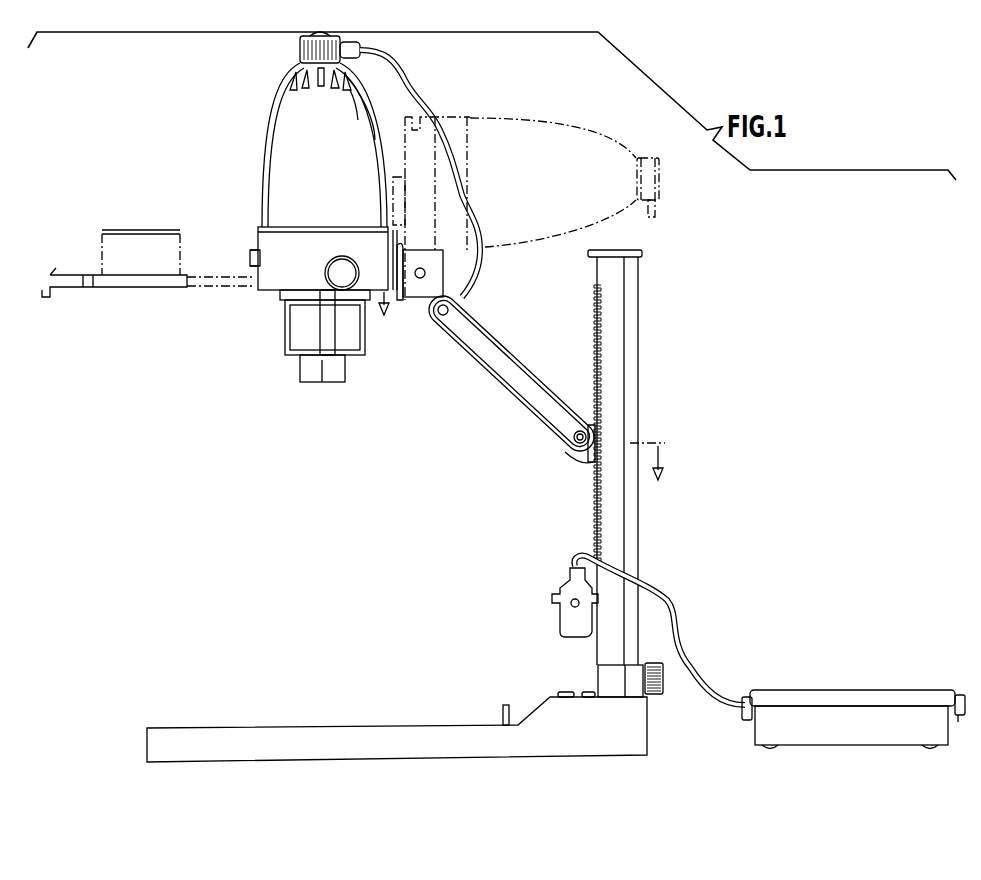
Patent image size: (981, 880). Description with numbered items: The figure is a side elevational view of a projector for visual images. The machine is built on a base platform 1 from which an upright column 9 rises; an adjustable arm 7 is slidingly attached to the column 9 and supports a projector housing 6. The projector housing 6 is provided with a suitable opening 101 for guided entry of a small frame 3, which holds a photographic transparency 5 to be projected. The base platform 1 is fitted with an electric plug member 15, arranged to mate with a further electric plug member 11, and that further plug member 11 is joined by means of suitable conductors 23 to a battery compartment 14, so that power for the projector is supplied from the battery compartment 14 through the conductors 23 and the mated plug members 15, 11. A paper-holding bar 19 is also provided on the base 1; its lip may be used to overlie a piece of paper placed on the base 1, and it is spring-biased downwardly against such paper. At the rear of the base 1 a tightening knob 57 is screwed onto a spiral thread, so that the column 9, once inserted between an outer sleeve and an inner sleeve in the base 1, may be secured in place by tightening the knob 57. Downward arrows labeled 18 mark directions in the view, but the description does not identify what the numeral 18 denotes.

The base platform 1 is at (275, 717).
The small frame 3 is at (120, 282).
The photographic transparency 5 is at (140, 230).
The projector housing 6 is at (250, 160).
The adjustable arm 7 is at (527, 360).
The upright column 9 is at (640, 396).
The electric plug member 11 is at (572, 622).
The battery compartment 14 is at (812, 690).
The electric plug member 15 is at (568, 690).
The optical axis / direction markers 18 is at (523, 402).
The paper-holding bar 19 is at (495, 720).
The conductors 23 is at (663, 605).
The tightening knob 57 is at (665, 680).
The opening 101 is at (262, 290).